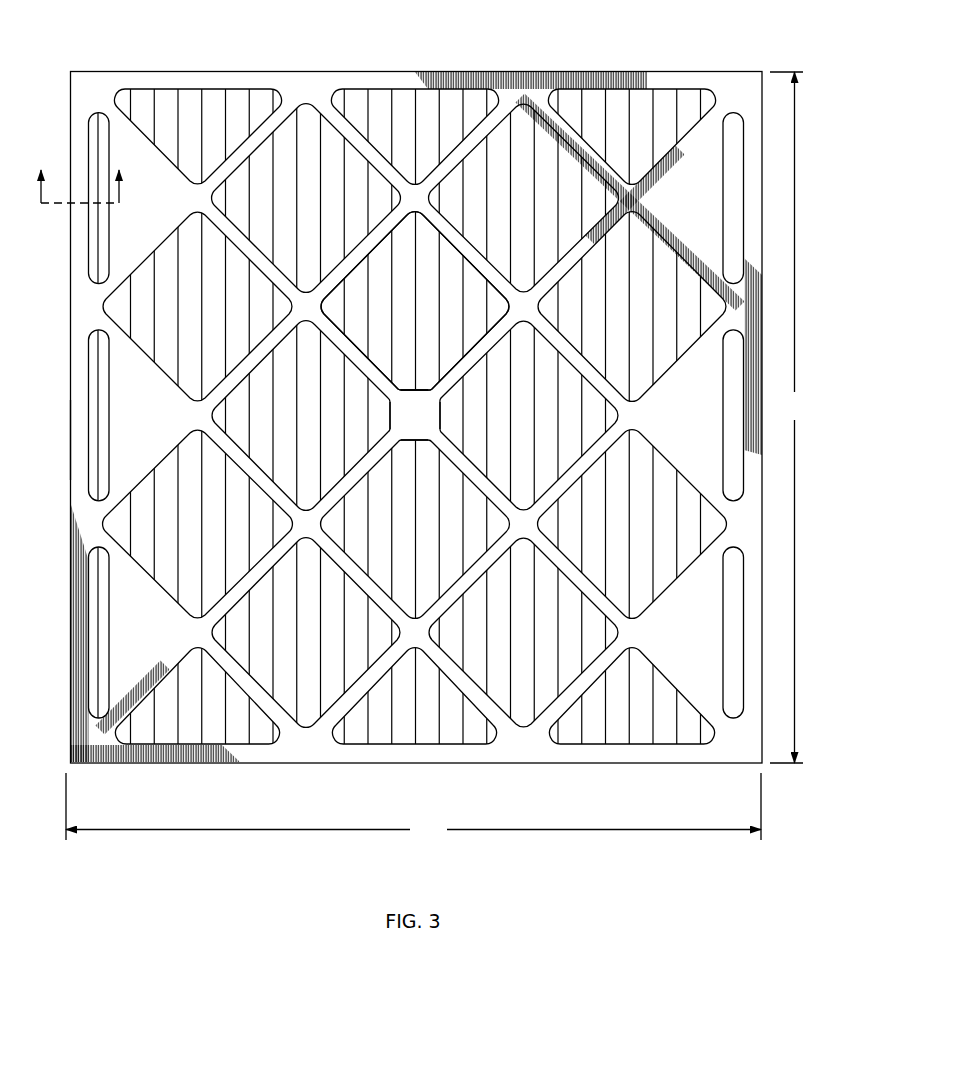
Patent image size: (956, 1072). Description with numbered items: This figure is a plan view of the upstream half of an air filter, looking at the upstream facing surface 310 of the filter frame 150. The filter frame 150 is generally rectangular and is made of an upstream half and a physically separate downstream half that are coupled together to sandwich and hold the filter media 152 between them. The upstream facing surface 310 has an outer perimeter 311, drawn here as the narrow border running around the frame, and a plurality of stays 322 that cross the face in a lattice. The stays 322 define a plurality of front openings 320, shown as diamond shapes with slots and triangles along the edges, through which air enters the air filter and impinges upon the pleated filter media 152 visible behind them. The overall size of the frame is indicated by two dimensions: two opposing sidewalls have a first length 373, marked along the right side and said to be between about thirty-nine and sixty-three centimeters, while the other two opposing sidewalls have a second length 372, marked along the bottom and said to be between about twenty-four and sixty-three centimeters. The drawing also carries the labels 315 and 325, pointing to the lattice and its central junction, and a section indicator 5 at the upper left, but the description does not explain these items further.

The filter frame 150 is at (735, 70).
The filter media 152 is at (312, 193).
The upstream facing surface 310 is at (305, 87).
The outer perimeter 311 is at (117, 443).
The support grid 315 is at (665, 680).
The front openings 320 is at (403, 123).
The stays 322 is at (573, 140).
The central hub 325 is at (412, 395).
The second length 372 is at (413, 806).
The first length 373 is at (791, 417).
The section line 5- 5 is at (80, 172).